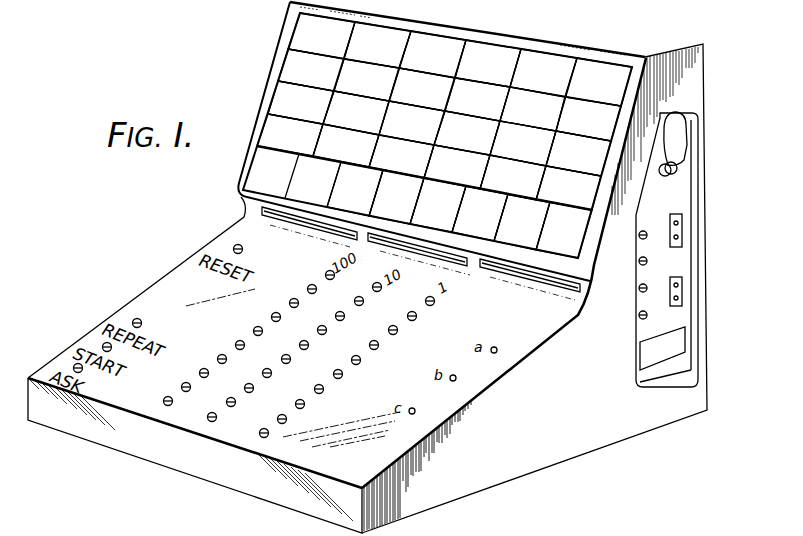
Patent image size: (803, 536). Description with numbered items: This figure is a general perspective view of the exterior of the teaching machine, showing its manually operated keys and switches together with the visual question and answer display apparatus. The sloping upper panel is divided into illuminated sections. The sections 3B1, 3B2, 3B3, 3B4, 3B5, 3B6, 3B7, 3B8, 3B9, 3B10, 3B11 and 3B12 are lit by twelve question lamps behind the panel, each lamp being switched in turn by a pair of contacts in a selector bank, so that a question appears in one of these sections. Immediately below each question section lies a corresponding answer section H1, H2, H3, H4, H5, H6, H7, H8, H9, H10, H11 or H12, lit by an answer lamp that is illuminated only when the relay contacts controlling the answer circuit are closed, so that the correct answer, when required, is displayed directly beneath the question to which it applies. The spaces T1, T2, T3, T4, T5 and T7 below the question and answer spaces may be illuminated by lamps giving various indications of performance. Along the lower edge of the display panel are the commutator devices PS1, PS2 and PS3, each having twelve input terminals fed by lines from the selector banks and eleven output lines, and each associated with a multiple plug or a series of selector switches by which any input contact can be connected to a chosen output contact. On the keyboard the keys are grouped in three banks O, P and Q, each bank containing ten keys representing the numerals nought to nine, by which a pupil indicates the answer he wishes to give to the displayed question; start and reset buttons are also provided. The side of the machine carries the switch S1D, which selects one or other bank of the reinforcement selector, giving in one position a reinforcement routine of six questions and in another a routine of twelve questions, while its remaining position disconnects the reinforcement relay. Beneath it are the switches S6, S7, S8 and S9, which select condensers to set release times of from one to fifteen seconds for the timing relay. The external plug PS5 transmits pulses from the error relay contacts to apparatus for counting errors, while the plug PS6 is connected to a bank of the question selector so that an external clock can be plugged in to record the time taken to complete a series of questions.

The question lamp 3B1 is at (321, 36).
The question lamp 3B2 is at (377, 45).
The question lamp 3B3 is at (432, 54).
The question lamp 3B4 is at (488, 63).
The question lamp 3B5 is at (543, 73).
The question lamp 3B6 is at (598, 82).
The question lamp 3B7 is at (301, 102).
The question lamp 3B8 is at (356, 113).
The question lamp 3B9 is at (412, 123).
The question lamp 3B10 is at (467, 133).
The question lamp 3B11 is at (523, 143).
The question lamp 3B12 is at (578, 153).
The answer lamp H1 is at (311, 70).
The answer lamp H2 is at (366, 80).
The answer lamp H3 is at (422, 89).
The answer lamp H4 is at (477, 99).
The answer lamp H5 is at (532, 109).
The answer lamp H6 is at (588, 119).
The answer lamp H7 is at (290, 135).
The answer lamp H8 is at (346, 145).
The answer lamp H9 is at (401, 156).
The answer lamp H10 is at (457, 167).
The answer lamp H11 is at (513, 177).
The answer lamp H12 is at (568, 188).
The display cell T1 is at (396, 197).
The display cell T2 is at (438, 205).
The display cell T3 is at (480, 213).
The display cell T4 is at (522, 222).
The display cell T5 is at (564, 230).
The display cell T7 is at (355, 189).
The commutator device PS1 is at (278, 218).
The commutator device PS2 is at (460, 262).
The commutator device PS3 is at (550, 277).
The external plug PS5 is at (678, 214).
The plug PS6 is at (672, 306).
The switch S1D is at (683, 112).
The switch S6 is at (639, 236).
The switch S7 is at (639, 262).
The switch S8 is at (639, 289).
The switch S9 is at (639, 316).
The bank of keys O is at (154, 414).
The bank of keys P is at (207, 431).
The bank of keys Q is at (254, 447).